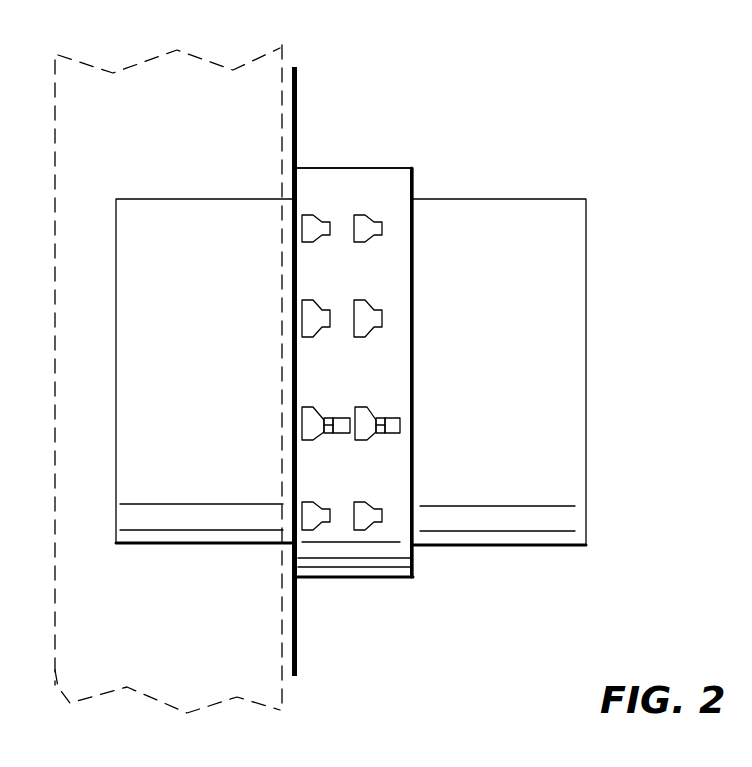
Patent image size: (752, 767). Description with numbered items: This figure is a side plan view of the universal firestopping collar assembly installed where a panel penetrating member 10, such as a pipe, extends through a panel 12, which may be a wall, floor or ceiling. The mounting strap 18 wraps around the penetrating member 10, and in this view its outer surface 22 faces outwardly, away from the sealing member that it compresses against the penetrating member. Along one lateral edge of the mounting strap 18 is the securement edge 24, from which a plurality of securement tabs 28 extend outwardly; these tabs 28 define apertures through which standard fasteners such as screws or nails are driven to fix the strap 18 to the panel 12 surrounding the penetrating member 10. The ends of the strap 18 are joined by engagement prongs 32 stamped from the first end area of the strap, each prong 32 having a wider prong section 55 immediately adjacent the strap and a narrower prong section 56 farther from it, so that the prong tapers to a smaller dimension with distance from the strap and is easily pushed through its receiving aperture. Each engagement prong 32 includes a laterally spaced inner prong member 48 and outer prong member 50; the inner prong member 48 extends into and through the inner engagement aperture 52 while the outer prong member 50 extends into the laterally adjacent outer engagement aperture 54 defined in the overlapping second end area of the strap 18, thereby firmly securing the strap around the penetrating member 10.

The panel penetrating member 10 is at (514, 365).
The panel 12 is at (186, 115).
The mounting strap 18 is at (470, 332).
The outer surface 22 is at (367, 482).
The securement edge 24 is at (297, 167).
The securement tab 28 is at (297, 97).
The engagement prong 32 is at (338, 433).
The inner prong member 48 is at (323, 426).
The outer prong member 50 is at (413, 427).
The inner engagement aperture 52 is at (312, 213).
The outer engagement aperture 54 is at (358, 213).
The wider prong section 55 is at (329, 417).
The narrower prong section 56 is at (341, 417).